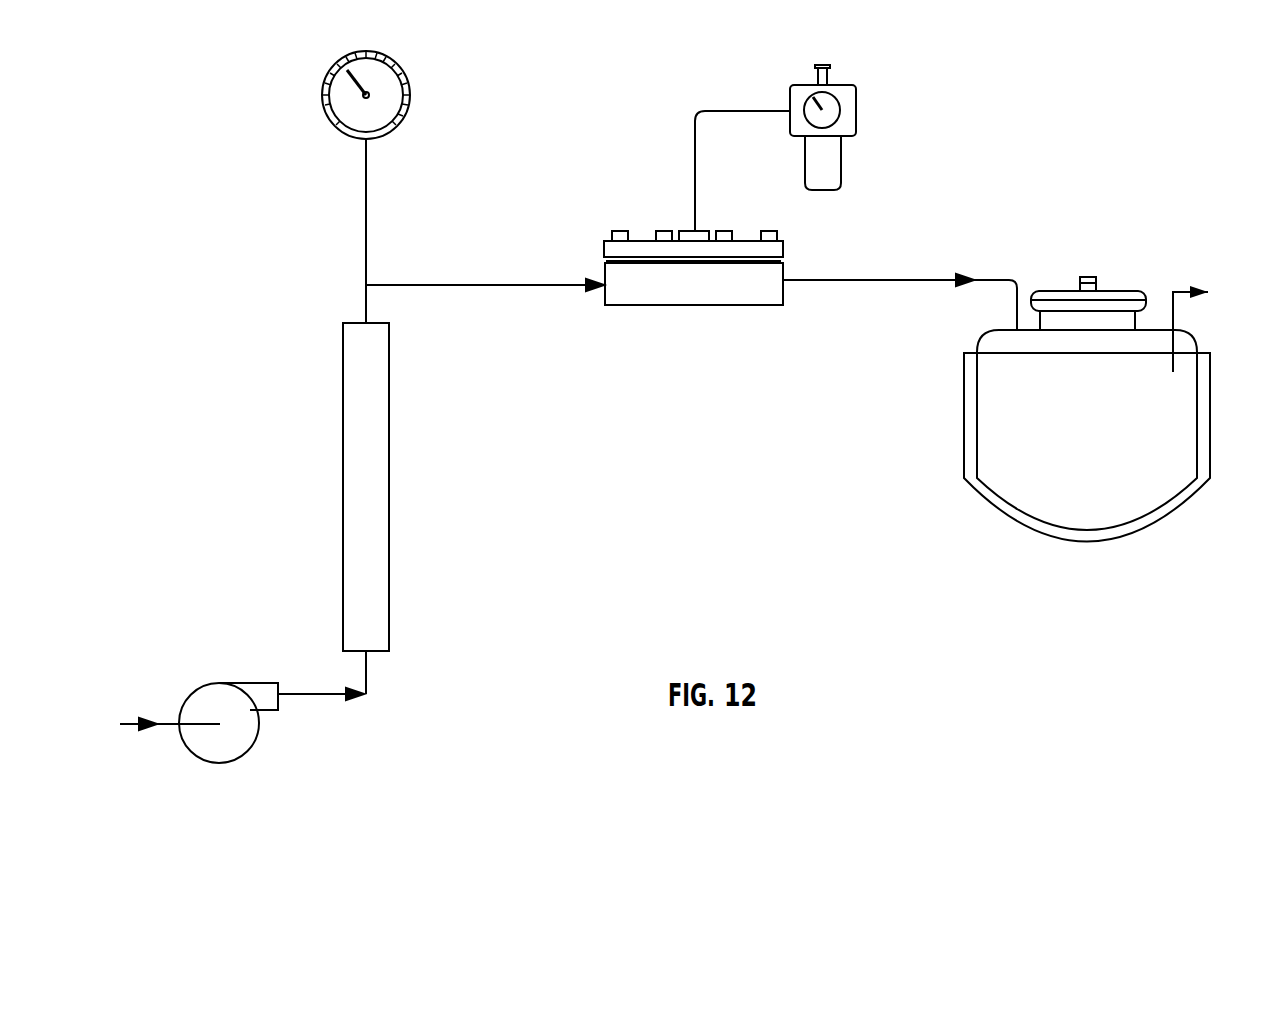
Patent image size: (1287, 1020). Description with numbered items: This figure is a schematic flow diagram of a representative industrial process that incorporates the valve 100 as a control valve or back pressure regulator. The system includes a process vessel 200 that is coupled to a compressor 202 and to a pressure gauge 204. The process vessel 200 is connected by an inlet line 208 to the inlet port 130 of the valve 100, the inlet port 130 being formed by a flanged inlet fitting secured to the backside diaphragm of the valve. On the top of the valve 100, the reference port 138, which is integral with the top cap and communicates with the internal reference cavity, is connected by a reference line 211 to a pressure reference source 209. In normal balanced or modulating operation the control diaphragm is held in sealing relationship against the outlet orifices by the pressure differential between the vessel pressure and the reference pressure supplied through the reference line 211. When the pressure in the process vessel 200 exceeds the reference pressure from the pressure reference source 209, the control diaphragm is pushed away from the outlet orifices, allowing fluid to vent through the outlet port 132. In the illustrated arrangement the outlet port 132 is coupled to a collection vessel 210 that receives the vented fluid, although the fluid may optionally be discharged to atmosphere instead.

The valve 100 is at (697, 267).
The inlet port 130 is at (605, 305).
The outlet port 132 is at (785, 297).
The reference port 138 is at (700, 230).
The process vessel 200 is at (377, 478).
The compressor 202 is at (237, 740).
The pressure gauge 204 is at (410, 96).
The inlet line 208 is at (503, 284).
The pressure reference source 209 is at (848, 85).
The collection vessel 210 is at (1210, 390).
The reference line 211 is at (752, 108).